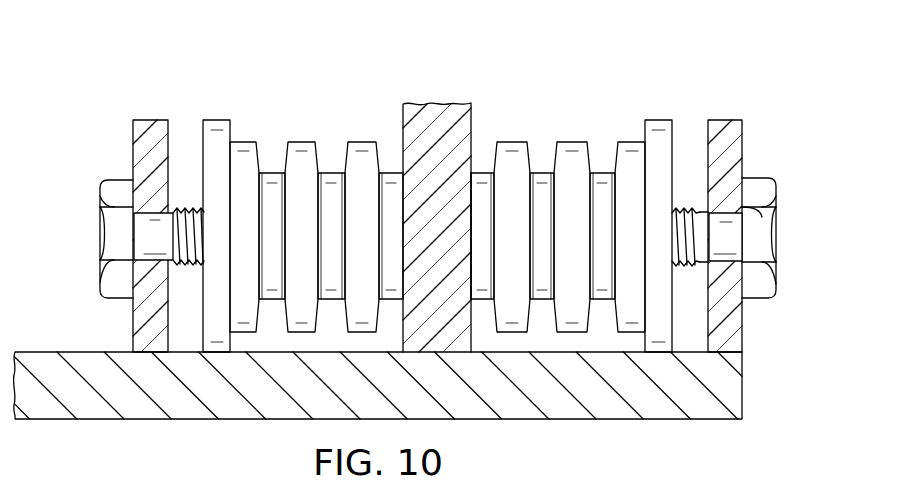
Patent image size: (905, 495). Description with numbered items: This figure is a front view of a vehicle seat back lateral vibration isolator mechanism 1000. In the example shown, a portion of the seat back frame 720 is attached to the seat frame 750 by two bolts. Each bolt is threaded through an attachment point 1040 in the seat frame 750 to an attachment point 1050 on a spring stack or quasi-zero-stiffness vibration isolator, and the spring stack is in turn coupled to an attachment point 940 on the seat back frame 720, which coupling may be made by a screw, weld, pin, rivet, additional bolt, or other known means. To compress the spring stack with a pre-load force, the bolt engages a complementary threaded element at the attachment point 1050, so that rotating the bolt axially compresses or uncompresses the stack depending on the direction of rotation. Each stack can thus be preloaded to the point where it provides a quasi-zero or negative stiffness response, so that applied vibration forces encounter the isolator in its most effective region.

The vehicle seat back lateral vibration isolator mechanism 1000 is at (185, 80).
The seat back frame 720 is at (412, 129).
The seat frame 750 is at (614, 411).
The attachment point on the seat back frame 940 is at (470, 187).
The attachment point in the seat frame 1040 is at (745, 212).
The attachment point on the spring stack 1050 is at (662, 215).